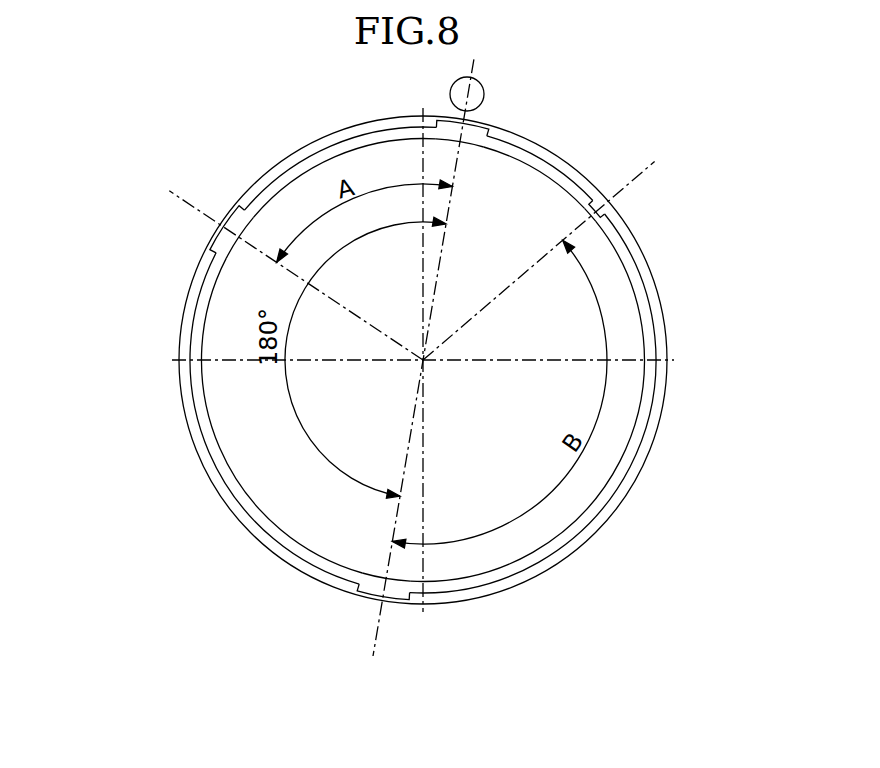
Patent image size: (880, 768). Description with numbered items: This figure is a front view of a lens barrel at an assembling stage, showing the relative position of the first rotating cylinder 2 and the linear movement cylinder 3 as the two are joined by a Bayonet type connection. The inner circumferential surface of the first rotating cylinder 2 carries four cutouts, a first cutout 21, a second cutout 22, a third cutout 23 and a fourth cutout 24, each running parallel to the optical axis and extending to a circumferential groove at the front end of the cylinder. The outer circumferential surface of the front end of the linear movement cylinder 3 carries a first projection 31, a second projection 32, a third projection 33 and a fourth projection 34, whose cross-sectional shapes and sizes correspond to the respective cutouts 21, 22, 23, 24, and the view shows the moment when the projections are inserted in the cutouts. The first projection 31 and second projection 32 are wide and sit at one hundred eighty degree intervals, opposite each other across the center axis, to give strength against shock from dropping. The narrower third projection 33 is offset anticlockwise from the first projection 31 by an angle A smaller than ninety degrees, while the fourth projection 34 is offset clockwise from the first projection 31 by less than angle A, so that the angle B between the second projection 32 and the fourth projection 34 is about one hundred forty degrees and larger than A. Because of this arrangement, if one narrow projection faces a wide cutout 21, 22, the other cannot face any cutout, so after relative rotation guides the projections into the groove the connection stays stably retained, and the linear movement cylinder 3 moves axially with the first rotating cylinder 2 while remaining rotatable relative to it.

The first rotating cylinder 2 is at (255, 188).
The linear movement cylinder 3 is at (303, 167).
The first cutout 21 is at (480, 127).
The second cutout 22 is at (395, 597).
The third cutout 23 is at (226, 233).
The fourth cutout 24 is at (603, 199).
The first projection 31 is at (470, 133).
The second projection 32 is at (388, 593).
The third projection 33 is at (237, 246).
The fourth projection 34 is at (619, 221).